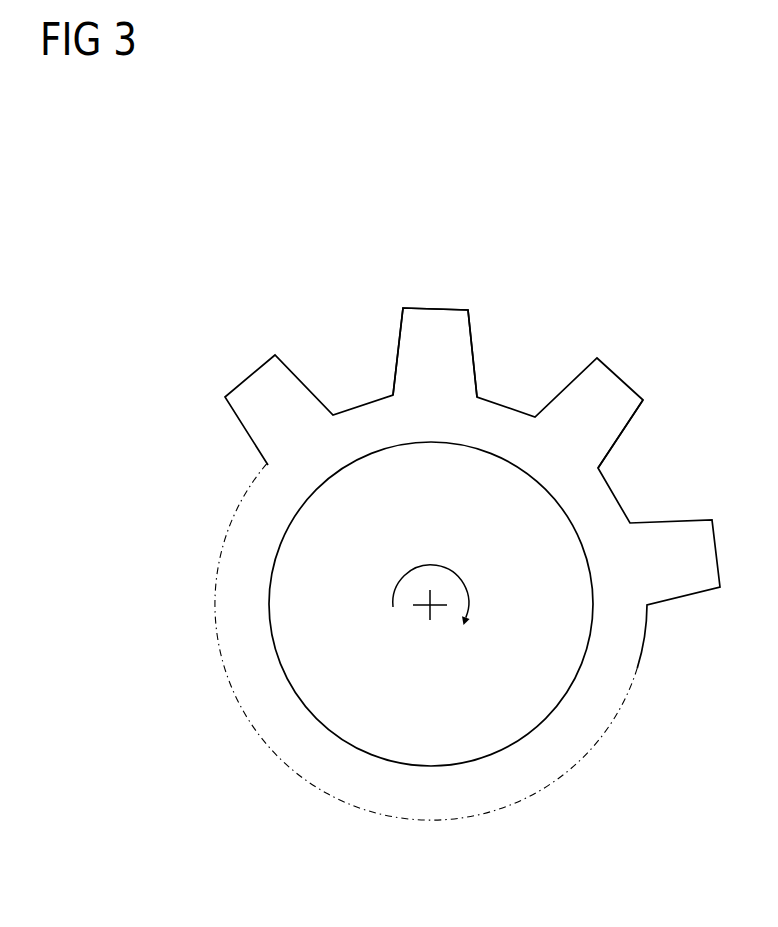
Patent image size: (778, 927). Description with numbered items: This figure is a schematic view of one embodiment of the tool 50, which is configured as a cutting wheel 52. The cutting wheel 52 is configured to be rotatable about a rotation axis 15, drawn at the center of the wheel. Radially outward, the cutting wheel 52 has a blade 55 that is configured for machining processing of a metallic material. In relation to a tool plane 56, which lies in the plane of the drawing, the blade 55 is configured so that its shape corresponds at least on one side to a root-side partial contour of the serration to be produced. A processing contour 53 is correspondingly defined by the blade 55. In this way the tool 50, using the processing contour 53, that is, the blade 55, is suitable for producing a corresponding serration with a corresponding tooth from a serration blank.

The rotation axis 15 is at (430, 607).
The tool 50 is at (600, 705).
The cutting wheel 52 is at (496, 604).
The processing contour 53 is at (445, 308).
The blade 55 is at (625, 435).
The tool plane 56 is at (199, 521).